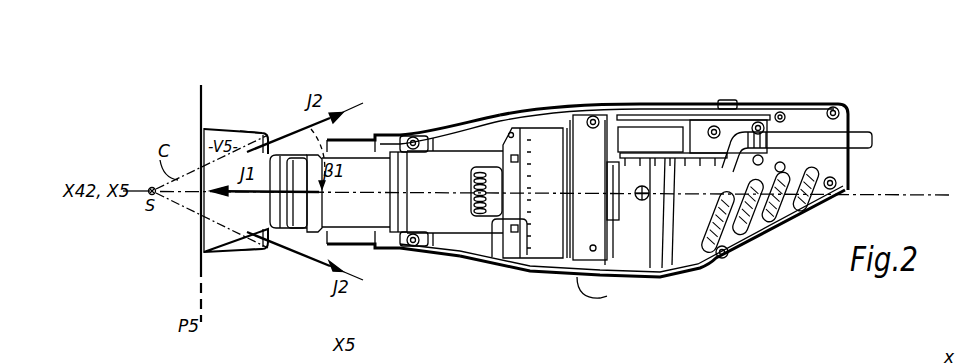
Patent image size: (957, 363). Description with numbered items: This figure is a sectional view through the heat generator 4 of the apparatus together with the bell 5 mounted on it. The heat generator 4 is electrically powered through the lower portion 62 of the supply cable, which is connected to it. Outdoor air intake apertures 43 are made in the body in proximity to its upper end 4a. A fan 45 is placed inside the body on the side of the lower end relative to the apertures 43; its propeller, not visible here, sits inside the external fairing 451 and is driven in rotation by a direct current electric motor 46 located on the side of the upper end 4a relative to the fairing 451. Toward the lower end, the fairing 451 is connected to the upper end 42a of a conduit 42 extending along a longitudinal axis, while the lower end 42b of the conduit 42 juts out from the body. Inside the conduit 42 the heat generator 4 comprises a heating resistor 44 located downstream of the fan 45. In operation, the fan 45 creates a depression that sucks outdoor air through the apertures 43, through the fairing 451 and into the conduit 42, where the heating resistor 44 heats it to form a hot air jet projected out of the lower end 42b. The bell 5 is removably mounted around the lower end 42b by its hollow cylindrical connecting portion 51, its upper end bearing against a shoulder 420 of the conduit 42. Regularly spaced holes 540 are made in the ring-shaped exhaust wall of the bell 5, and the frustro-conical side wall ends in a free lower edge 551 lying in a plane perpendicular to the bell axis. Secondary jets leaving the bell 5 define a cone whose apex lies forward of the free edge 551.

The heat generator 4 is at (517, 275).
The upper end of the body 4a is at (838, 108).
The bell 5 is at (237, 128).
The conduit 42 is at (370, 136).
The upper end of the conduit 42a is at (487, 150).
The lower end of the conduit 42b is at (283, 232).
The shoulder of the conduit 420 is at (312, 234).
The outdoor air intake apertures 43 is at (797, 222).
The heating resistor 44 is at (475, 220).
The fan 45 is at (550, 148).
The external fairing of the fan 451 is at (558, 258).
The direct current electric motor 46 is at (618, 133).
The connecting portion 51 is at (297, 230).
The holes 540 is at (252, 250).
The lower edge of the side wall 551 is at (190, 230).
The lower portion of the cable 62 is at (873, 140).